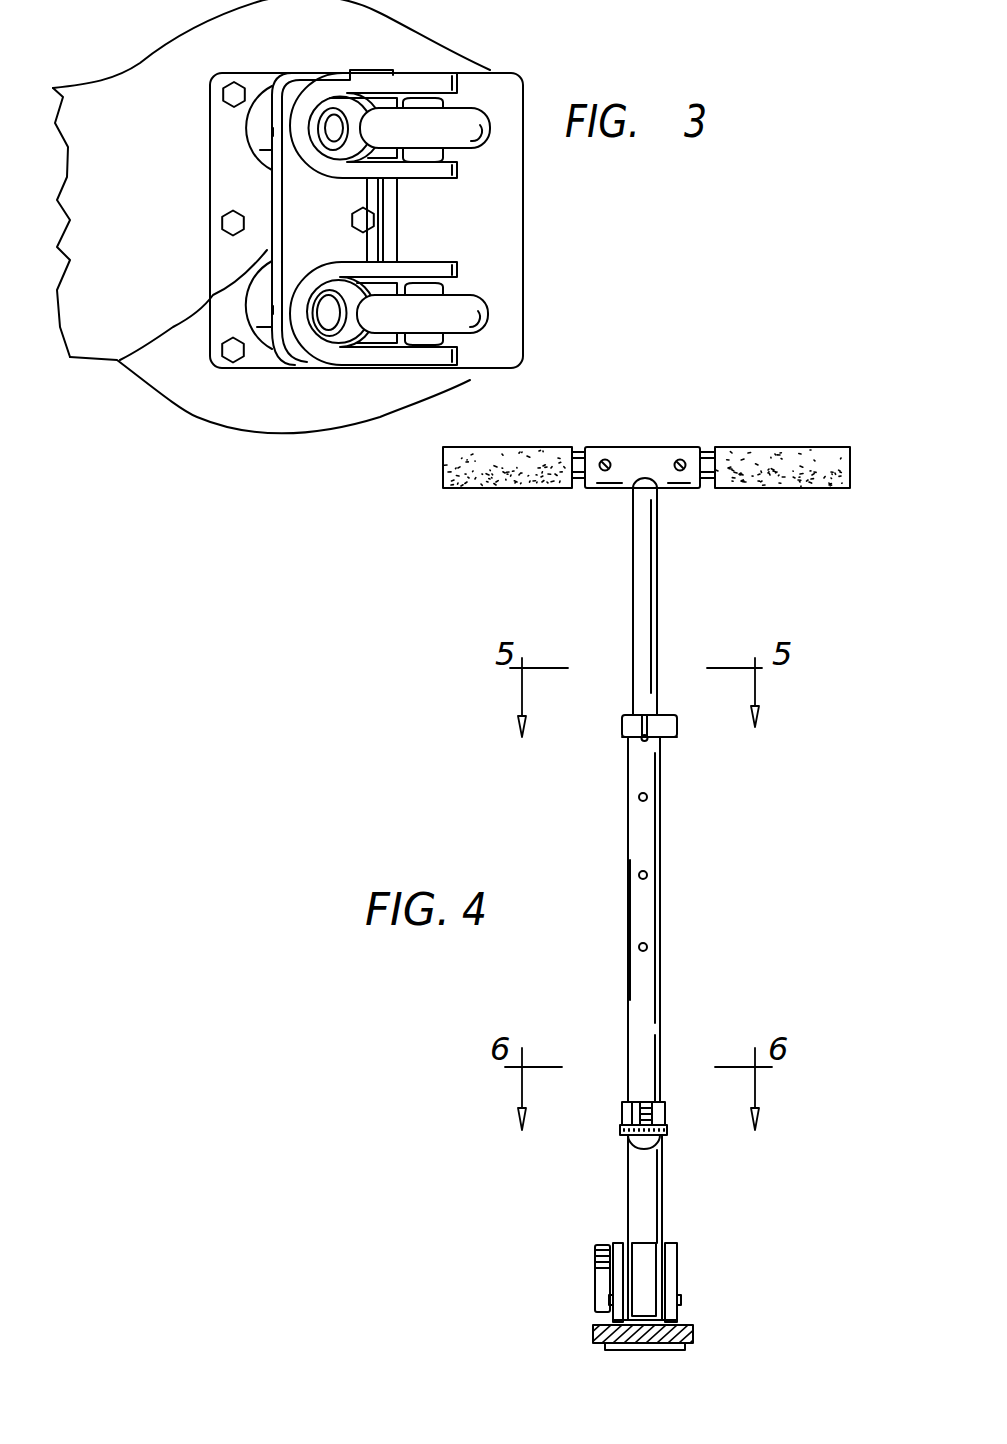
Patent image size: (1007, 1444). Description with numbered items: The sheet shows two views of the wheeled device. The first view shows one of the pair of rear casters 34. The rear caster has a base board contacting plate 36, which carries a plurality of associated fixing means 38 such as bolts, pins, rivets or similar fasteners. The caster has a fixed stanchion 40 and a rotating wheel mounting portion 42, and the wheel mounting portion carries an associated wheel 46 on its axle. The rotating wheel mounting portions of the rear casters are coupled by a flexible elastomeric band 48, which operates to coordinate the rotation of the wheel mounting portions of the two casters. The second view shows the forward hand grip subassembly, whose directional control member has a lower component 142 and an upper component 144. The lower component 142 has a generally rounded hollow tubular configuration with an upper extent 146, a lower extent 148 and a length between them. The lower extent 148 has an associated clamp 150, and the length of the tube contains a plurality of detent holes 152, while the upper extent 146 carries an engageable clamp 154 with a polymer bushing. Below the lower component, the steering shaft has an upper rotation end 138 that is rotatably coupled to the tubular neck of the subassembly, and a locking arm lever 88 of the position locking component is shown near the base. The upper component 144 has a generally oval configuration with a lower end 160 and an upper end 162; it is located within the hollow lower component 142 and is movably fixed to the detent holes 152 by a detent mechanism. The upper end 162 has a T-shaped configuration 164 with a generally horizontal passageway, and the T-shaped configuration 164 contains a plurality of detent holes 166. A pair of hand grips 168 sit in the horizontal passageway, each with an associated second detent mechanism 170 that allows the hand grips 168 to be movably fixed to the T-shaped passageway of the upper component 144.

In FIG. 3, the rear casters 34 is at (474, 168).
In FIG. 3, the base board contacting plate 36 is at (230, 170).
In FIG. 3, the fixing means 38 is at (232, 352).
In FIG. 3, the fixed stanchion 40 is at (270, 340).
In FIG. 3, the rotating wheel mounting portion 42 is at (330, 312).
In FIG. 3, the wheel 46 is at (452, 118).
In FIG. 3, the flexible elastomeric band 48 is at (120, 360).
In FIG. 4, the locking arm lever 88 is at (595, 1270).
In FIG. 4, the upper rotation end 138 is at (663, 1142).
In FIG. 4, the lower component 142 is at (607, 1118).
In FIG. 4, the upper component 144 is at (618, 594).
In FIG. 4, the upper extent 146 is at (665, 753).
In FIG. 4, the lower extent 148 is at (627, 1090).
In FIG. 4, the clamp 150 is at (697, 902).
In FIG. 4, the detent holes 152 is at (648, 947).
In FIG. 4, the engageable clamp 154 is at (613, 732).
In FIG. 4, the lower end 160 is at (655, 705).
In FIG. 4, the upper end 162 is at (657, 538).
In FIG. 4, the T-shaped configuration 164 is at (637, 440).
In FIG. 4, the detent holes 166 is at (681, 458).
In FIG. 4, the hand grips 168 is at (580, 446).
In FIG. 4, the second detent mechanism 170 is at (843, 445).